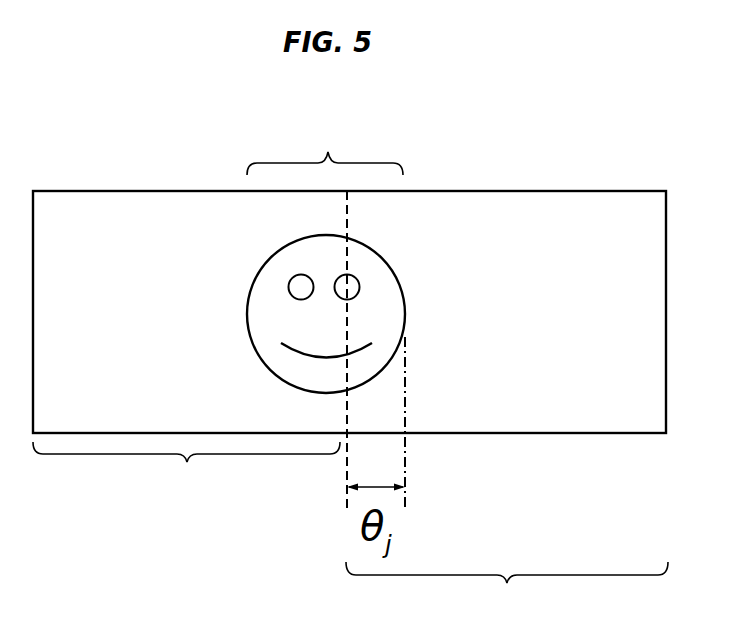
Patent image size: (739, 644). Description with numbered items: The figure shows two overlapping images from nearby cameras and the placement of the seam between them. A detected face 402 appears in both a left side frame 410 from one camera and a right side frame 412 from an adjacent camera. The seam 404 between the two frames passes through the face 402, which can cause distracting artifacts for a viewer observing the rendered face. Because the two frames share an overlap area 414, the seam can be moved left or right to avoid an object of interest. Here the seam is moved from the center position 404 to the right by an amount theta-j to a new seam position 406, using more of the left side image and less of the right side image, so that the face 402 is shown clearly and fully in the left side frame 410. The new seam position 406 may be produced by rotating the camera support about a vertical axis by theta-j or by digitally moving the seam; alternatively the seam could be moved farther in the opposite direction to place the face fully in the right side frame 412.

The detected face 402 is at (247, 315).
The seam 404 is at (348, 212).
The new seam position 406 is at (406, 389).
The left side frame 410 is at (186, 467).
The right side frame 412 is at (507, 587).
The overlap area 414 is at (325, 151).